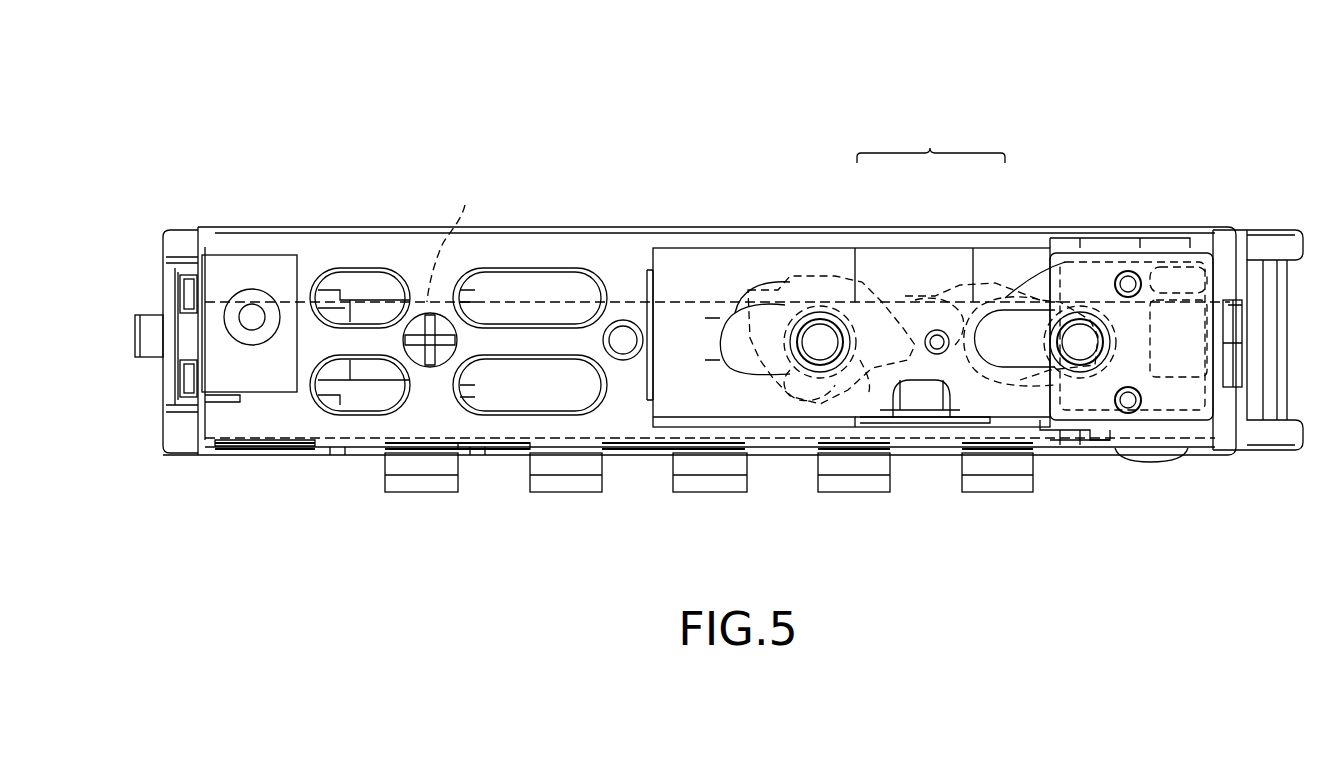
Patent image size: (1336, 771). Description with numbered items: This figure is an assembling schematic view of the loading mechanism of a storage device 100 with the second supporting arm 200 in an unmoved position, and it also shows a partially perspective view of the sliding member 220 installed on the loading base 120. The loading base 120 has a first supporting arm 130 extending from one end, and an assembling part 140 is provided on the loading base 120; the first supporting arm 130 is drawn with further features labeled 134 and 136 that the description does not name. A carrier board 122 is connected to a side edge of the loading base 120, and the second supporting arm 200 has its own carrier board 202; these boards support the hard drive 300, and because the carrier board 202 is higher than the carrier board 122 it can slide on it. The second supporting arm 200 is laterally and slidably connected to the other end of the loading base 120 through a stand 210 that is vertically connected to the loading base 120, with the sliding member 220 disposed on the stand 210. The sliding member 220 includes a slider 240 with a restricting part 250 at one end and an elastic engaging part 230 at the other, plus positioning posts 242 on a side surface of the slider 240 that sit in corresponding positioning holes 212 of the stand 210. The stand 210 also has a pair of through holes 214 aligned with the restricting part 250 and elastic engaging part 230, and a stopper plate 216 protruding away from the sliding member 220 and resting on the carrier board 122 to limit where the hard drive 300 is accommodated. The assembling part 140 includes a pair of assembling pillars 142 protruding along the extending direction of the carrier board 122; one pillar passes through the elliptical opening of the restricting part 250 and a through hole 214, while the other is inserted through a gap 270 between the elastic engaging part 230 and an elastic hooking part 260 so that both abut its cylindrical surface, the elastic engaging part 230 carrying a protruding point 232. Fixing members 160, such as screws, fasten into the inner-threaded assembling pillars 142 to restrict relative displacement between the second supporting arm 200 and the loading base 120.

The storage device 100 is at (826, 98).
The loading base 120 is at (417, 424).
The carrier board 122 is at (498, 450).
The first supporting arm 130 is at (167, 291).
The mounting block 134 is at (218, 402).
The bottom bar 136 is at (256, 448).
The assembling part 140 is at (748, 538).
The assembling pillar 142 is at (800, 355).
The fixing member 160 is at (1088, 440).
The second supporting arm 200 is at (1236, 228).
The carrier board 202 is at (1140, 450).
The stand 210 is at (687, 268).
The positioning hole 212 is at (948, 430).
The through hole 214 is at (738, 330).
The stopper plate 216 is at (620, 325).
The sliding member 220 is at (931, 136).
The elastic engaging part 230 is at (814, 286).
The protruding point 232 is at (768, 330).
The slider 240 is at (927, 300).
The positioning post 242 is at (934, 355).
The restricting part 250 is at (985, 320).
The elastic hooking part 260 is at (815, 405).
The gap 270 is at (870, 385).
The hard drive 300 is at (445, 269).